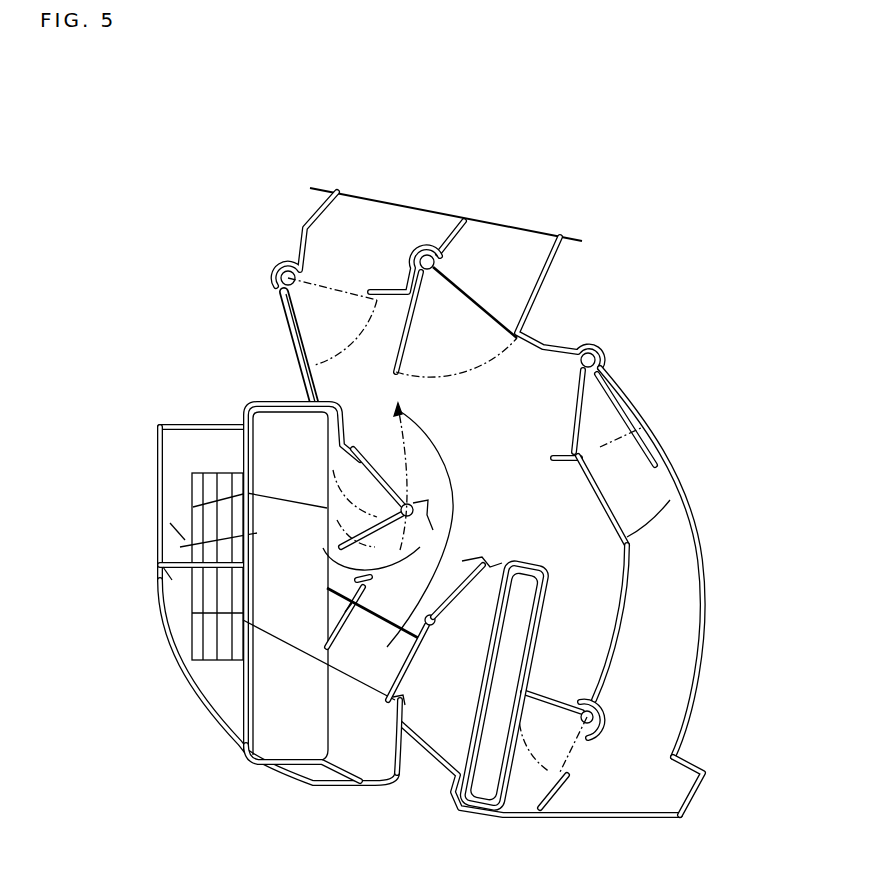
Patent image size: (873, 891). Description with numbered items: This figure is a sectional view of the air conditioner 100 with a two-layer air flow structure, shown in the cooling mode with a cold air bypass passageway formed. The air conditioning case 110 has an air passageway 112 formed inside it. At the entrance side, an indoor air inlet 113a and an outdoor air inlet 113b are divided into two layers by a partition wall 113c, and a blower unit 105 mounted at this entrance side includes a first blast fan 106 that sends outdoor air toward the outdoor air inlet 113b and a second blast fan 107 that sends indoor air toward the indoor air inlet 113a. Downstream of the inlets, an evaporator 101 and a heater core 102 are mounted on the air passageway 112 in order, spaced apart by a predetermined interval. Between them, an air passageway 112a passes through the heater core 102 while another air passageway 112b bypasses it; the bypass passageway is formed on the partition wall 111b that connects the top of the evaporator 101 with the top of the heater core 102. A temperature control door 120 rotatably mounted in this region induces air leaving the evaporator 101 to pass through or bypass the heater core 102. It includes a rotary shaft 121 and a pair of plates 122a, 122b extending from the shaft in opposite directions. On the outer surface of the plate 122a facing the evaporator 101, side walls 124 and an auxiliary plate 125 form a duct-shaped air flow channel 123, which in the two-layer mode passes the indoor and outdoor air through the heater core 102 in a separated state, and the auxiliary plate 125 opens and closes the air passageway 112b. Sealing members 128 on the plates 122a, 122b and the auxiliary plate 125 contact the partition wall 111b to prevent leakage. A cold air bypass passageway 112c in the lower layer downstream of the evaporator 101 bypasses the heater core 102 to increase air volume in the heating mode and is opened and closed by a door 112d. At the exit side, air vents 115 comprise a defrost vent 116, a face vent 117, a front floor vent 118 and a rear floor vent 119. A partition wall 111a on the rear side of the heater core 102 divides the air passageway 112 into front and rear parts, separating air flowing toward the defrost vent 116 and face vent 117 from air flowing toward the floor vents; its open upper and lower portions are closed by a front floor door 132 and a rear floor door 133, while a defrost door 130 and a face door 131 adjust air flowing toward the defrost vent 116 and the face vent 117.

The air conditioner 100 is at (660, 366).
The evaporator 101 is at (240, 743).
The heater core 102 is at (483, 795).
The blower unit 105 is at (192, 472).
The first blast fan 106 is at (172, 492).
The second blast fan 107 is at (170, 663).
The air conditioning case 110 is at (693, 530).
The partition wall 111a is at (620, 633).
The partition wall 111b is at (327, 457).
The air passageway 112 is at (513, 424).
The air passageway 112a is at (500, 608).
The air passageway 112b is at (447, 540).
The cold air bypass passageway 112c is at (403, 443).
The door 112d is at (353, 527).
The indoor air inlet 113a is at (192, 613).
The outdoor air inlet 113b is at (170, 523).
The partition wall 113c is at (160, 580).
The air vents 115 is at (466, 118).
The defrost vent 116 is at (363, 227).
The face vent 117 is at (477, 247).
The front floor vent 118 is at (663, 450).
The rear floor vent 119 is at (687, 800).
The temperature control door 120 is at (324, 729).
The rotary shaft 121 is at (427, 647).
The plate 122a is at (385, 688).
The plate 122b is at (470, 612).
The air flow channel 123 is at (360, 660).
The side walls 124 is at (353, 562).
The auxiliary plate 125 is at (357, 583).
The sealing members 128 is at (345, 612).
The defrost door 130 is at (285, 330).
The face door 131 is at (490, 303).
The front floor door 132 is at (628, 388).
The rear floor door 133 is at (560, 683).